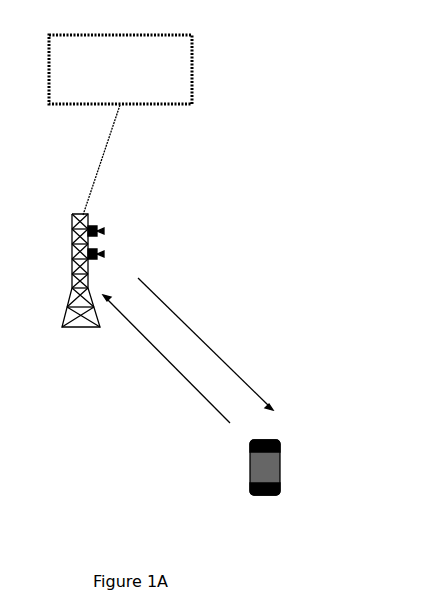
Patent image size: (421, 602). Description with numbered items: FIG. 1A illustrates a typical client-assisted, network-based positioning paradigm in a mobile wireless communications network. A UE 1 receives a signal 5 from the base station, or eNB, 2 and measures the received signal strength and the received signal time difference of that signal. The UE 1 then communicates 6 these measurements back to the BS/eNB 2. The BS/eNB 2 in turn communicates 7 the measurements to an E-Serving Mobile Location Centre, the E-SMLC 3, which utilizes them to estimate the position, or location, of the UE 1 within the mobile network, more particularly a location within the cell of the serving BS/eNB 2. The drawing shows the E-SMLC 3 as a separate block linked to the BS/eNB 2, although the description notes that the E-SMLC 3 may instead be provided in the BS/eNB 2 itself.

The UE 1 is at (280, 467).
The base station (BS) or eNB 2 is at (72, 273).
The E-Serving Mobile Location Centre (E-SMLC) 3 is at (120, 69).
The signal 5 is at (205, 343).
The communicates 6 is at (172, 365).
The communicates 7 is at (97, 176).